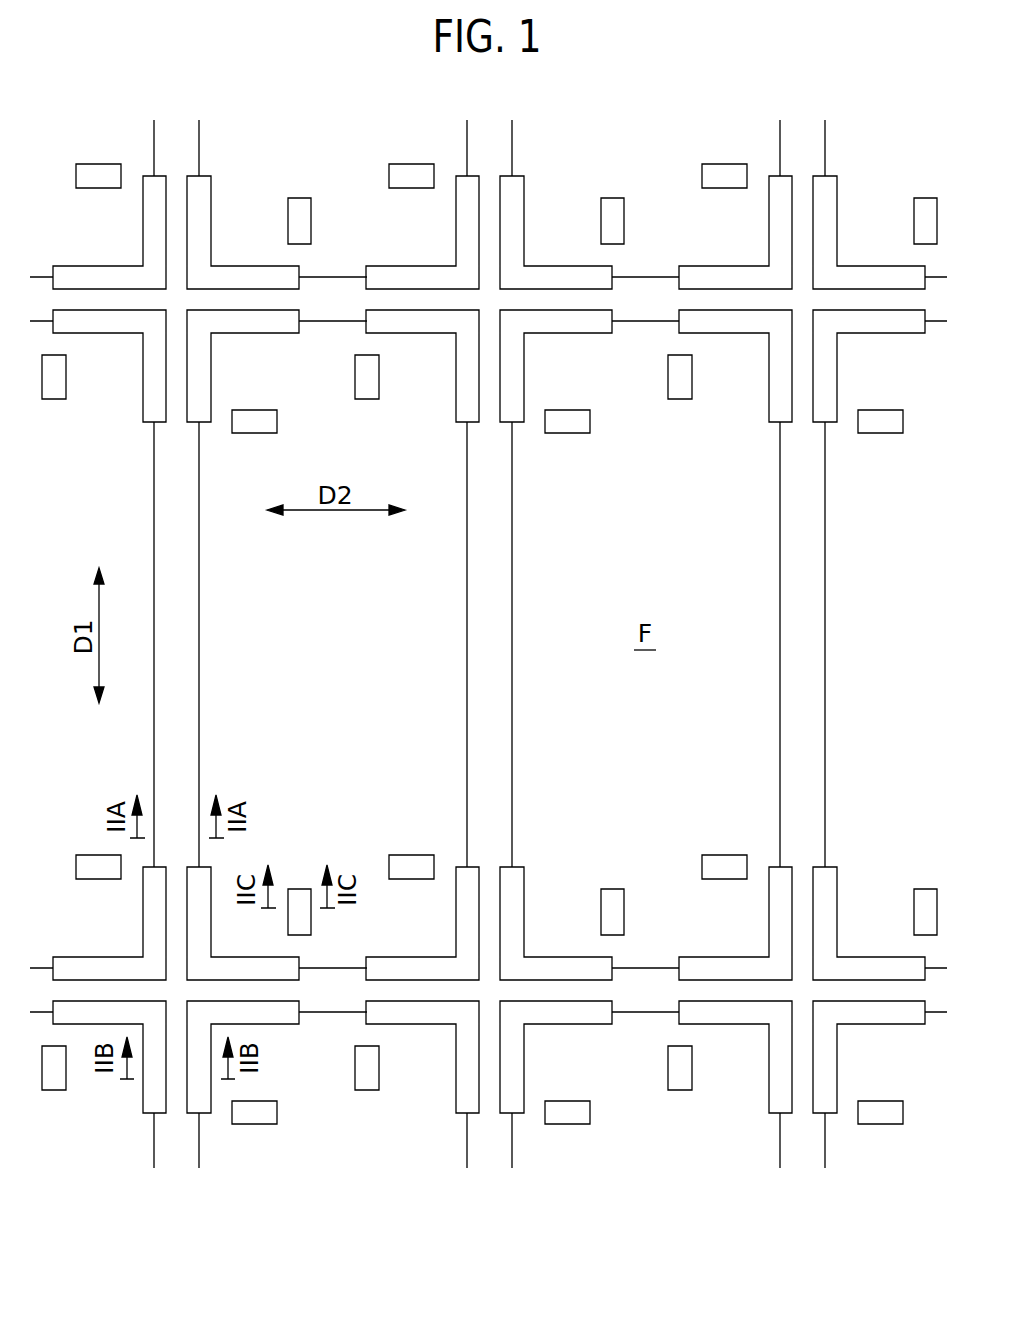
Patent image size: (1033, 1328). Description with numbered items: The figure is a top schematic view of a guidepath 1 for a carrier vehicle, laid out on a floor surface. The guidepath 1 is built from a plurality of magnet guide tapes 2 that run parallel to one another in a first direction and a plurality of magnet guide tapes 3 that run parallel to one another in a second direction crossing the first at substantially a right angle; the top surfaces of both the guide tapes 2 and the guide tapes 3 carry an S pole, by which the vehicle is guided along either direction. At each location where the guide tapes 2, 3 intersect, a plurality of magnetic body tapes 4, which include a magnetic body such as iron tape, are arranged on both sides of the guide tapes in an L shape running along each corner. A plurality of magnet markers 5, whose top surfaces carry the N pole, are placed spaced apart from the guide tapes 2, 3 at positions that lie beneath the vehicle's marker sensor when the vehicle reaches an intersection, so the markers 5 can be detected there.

The guidepath 1 is at (879, 133).
The magnet guide tape (first path magnetic tape) 2 is at (199, 745).
The magnet guide tape (second path magnetic tape) 3 is at (652, 277).
The magnetic body tape (suppression tape) 4 is at (97, 266).
The magnet marker 5 is at (98, 164).